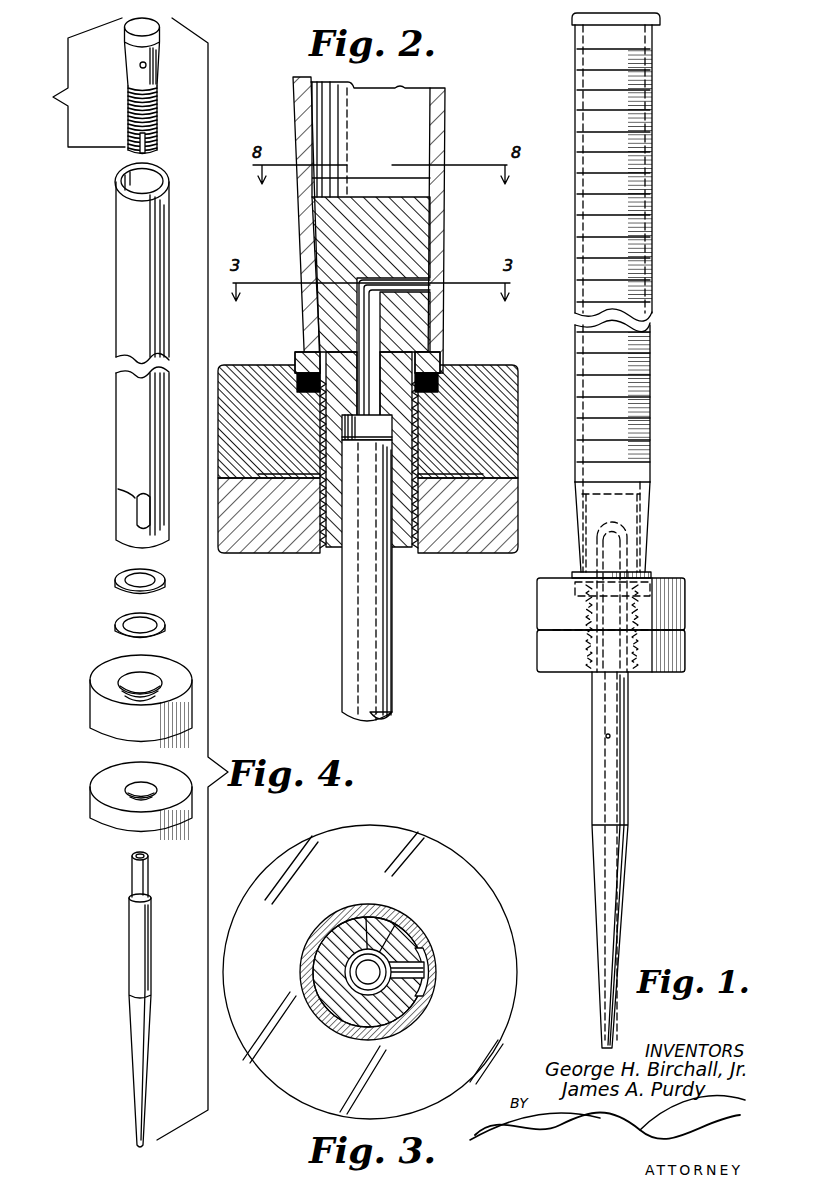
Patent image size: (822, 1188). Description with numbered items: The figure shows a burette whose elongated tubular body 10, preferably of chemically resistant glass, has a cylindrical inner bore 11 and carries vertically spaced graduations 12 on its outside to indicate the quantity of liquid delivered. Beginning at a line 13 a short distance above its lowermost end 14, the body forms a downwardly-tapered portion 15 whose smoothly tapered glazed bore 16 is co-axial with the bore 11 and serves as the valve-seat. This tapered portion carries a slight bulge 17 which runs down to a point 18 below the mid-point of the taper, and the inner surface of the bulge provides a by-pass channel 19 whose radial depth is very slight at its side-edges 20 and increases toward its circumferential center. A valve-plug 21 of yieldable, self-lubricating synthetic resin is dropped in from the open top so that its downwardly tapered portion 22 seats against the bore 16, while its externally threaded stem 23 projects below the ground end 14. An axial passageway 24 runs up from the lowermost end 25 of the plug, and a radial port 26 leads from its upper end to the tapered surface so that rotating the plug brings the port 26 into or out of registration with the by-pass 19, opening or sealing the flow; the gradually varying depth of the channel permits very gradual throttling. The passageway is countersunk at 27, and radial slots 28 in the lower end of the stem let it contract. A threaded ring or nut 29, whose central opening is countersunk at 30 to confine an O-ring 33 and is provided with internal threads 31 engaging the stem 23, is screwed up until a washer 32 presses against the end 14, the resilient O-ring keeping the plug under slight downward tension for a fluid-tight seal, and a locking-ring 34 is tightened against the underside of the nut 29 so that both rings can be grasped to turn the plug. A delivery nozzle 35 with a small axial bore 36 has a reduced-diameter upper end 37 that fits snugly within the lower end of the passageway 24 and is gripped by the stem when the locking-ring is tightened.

In FIG. 4, the tubular body 10 is at (116, 268).
In FIG. 2, the tubular body 10 is at (447, 100).
In FIG. 3, the tubular body 10 is at (392, 925).
In FIG. 1, the tubular body 10 is at (652, 225).
In FIG. 2, the inner surface or bore 11 is at (428, 140).
In FIG. 1, the inner surface or bore 11 is at (583, 447).
In FIG. 1, the graduations 12 is at (635, 137).
In FIG. 4, the line 13 is at (118, 489).
In FIG. 1, the line 13 is at (632, 481).
In FIG. 4, the lowermost end 14 is at (128, 555).
In FIG. 2, the lowermost end 14 is at (436, 345).
In FIG. 4, the downwardly-tapered portion 15 is at (118, 510).
In FIG. 2, the downwardly-tapered portion 15 is at (299, 249).
In FIG. 1, the downwardly-tapered portion 15 is at (582, 547).
In FIG. 2, the tapered inner surface or bore 16 is at (318, 306).
In FIG. 4, the bulge 17 is at (140, 522).
In FIG. 2, the bulge 17 is at (443, 295).
In FIG. 3, the bulge 17 is at (440, 972).
In FIG. 1, the bulge 17 is at (650, 533).
In FIG. 4, the point 18 is at (145, 535).
In FIG. 1, the point 18 is at (645, 545).
In FIG. 2, the by-pass channel 19 is at (436, 262).
In FIG. 3, the by-pass channel 19 is at (435, 985).
In FIG. 1, the by-pass channel 19 is at (652, 522).
In FIG. 4, the side-edges of channel 20 is at (148, 515).
In FIG. 3, the side-edges of channel 20 is at (425, 945).
In FIG. 4, the valve-plug 21 is at (116, 91).
In FIG. 2, the valve-plug 21 is at (390, 197).
In FIG. 3, the valve-plug 21 is at (415, 935).
In FIG. 1, the valve-plug 21 is at (652, 570).
In FIG. 4, the tapered portion of valve-plug 22 is at (118, 42).
In FIG. 2, the tapered portion of valve-plug 22 is at (440, 238).
In FIG. 4, the threaded stem 23 is at (160, 145).
In FIG. 2, the threaded stem 23 is at (400, 495).
In FIG. 2, the axial passageway 24 is at (373, 322).
In FIG. 1, the axial passageway 24 is at (612, 552).
In FIG. 4, the lowermost end of valve-plug 25 is at (128, 150).
In FIG. 2, the lowermost end of valve-plug 25 is at (340, 555).
In FIG. 4, the radial passageway or port 26 is at (160, 65).
In FIG. 2, the radial passageway or port 26 is at (425, 283).
In FIG. 3, the radial passageway or port 26 is at (358, 922).
In FIG. 2, the countersink 27 is at (385, 428).
In FIG. 1, the countersink 27 is at (575, 610).
In FIG. 4, the radial slot 28 is at (150, 152).
In FIG. 2, the radial slot 28 is at (400, 555).
In FIG. 4, the threaded ring or nut 29 is at (90, 714).
In FIG. 2, the threaded ring or nut 29 is at (500, 367).
In FIG. 3, the threaded ring or nut 29 is at (450, 856).
In FIG. 1, the threaded ring or nut 29 is at (688, 597).
In FIG. 4, the countersink of ring 30 is at (150, 675).
In FIG. 4, the internal threads of nut 31 is at (130, 690).
In FIG. 4, the washer 32 is at (115, 588).
In FIG. 2, the washer 32 is at (297, 352).
In FIG. 1, the washer 32 is at (575, 575).
In FIG. 4, the O-ring 33 is at (115, 628).
In FIG. 2, the O-ring 33 is at (298, 372).
In FIG. 4, the locking-ring 34 is at (92, 808).
In FIG. 2, the locking-ring 34 is at (495, 517).
In FIG. 1, the locking-ring 34 is at (688, 652).
In FIG. 4, the delivery tip or nozzle 35 is at (128, 951).
In FIG. 2, the delivery tip or nozzle 35 is at (405, 650).
In FIG. 1, the delivery tip or nozzle 35 is at (592, 753).
In FIG. 4, the axial bore of nozzle 36 is at (150, 856).
In FIG. 3, the axial bore of nozzle 36 is at (378, 985).
In FIG. 1, the axial bore of nozzle 36 is at (605, 735).
In FIG. 4, the reduced-diameter upper end 37 is at (130, 884).
In FIG. 2, the reduced-diameter upper end 37 is at (340, 540).
In FIG. 3, the reduced-diameter upper end 37 is at (370, 990).